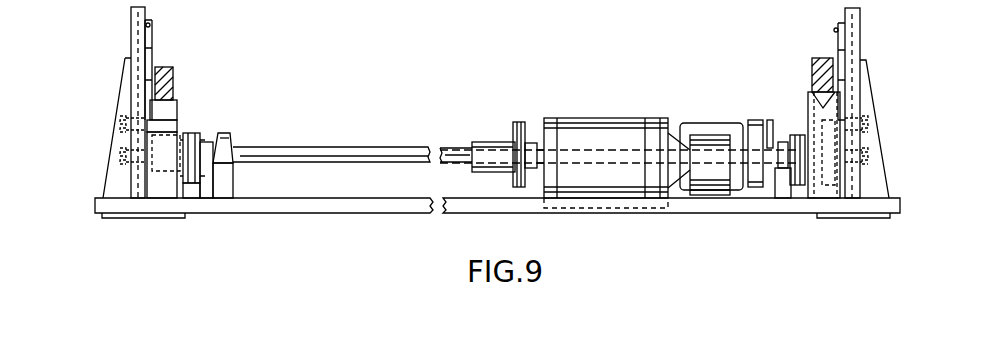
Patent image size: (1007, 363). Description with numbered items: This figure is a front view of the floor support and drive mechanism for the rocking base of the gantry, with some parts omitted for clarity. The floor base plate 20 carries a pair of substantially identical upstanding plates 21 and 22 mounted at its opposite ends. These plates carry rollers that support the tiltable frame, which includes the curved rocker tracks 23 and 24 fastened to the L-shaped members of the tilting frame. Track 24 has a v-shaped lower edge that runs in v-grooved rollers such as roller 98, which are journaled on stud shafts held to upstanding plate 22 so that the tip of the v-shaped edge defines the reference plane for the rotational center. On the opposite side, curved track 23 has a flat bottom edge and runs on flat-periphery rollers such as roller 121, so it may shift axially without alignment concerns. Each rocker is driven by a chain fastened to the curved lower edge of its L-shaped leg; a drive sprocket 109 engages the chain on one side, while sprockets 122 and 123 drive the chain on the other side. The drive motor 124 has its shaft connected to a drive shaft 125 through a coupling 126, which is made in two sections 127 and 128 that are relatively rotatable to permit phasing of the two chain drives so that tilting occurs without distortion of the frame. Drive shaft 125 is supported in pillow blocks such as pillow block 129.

The floor base plate 20 is at (351, 204).
The upstanding plate 21 is at (138, 38).
The upstanding plate 22 is at (860, 33).
The curved rocker track 23 is at (173, 80).
The curved rocker track 24 is at (811, 72).
The roller 98 is at (827, 200).
The drive sprocket 109 is at (782, 186).
The roller 121 is at (177, 112).
The sprocket 122 is at (197, 132).
The sprocket 123 is at (195, 185).
The drive motor 124 is at (622, 120).
The drive shaft 125 is at (355, 155).
The coupling 126 is at (498, 130).
The coupling section 127 is at (516, 121).
The coupling section 128 is at (528, 124).
The pillow block 129 is at (238, 135).